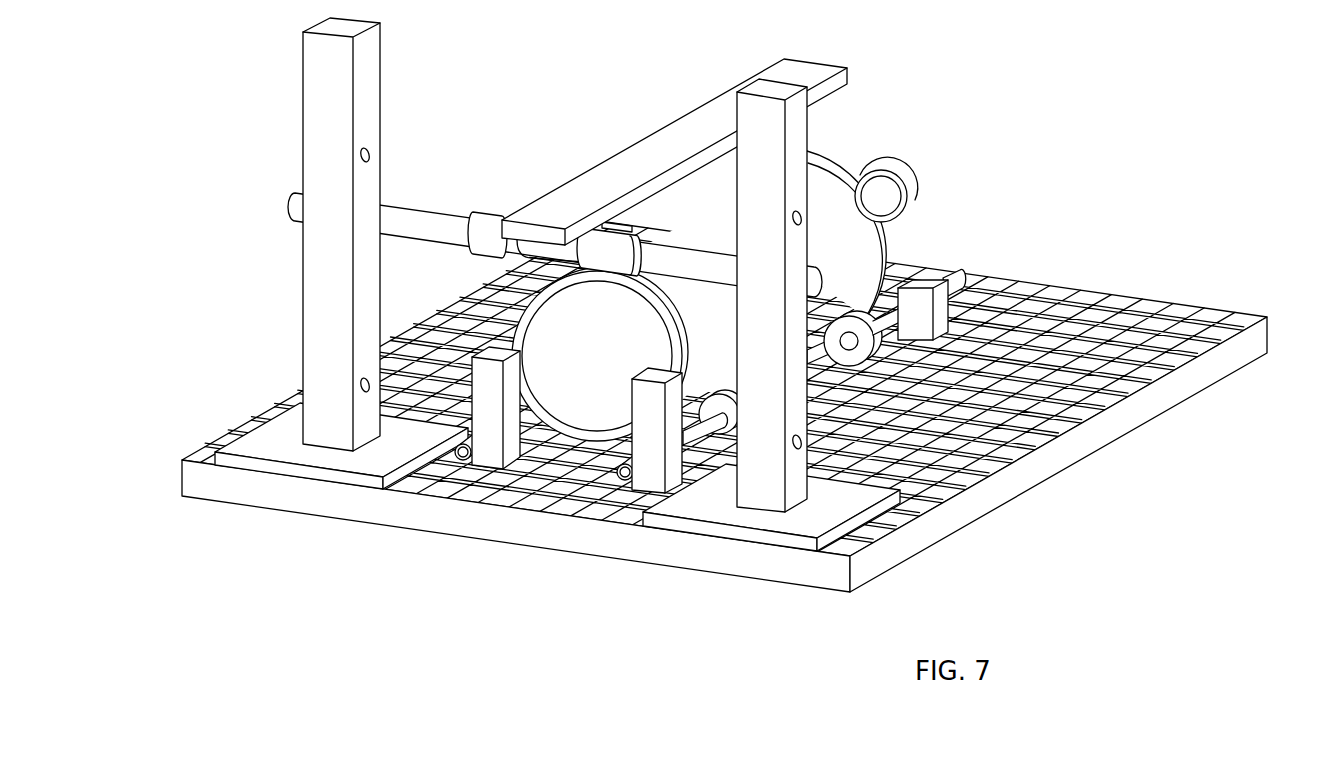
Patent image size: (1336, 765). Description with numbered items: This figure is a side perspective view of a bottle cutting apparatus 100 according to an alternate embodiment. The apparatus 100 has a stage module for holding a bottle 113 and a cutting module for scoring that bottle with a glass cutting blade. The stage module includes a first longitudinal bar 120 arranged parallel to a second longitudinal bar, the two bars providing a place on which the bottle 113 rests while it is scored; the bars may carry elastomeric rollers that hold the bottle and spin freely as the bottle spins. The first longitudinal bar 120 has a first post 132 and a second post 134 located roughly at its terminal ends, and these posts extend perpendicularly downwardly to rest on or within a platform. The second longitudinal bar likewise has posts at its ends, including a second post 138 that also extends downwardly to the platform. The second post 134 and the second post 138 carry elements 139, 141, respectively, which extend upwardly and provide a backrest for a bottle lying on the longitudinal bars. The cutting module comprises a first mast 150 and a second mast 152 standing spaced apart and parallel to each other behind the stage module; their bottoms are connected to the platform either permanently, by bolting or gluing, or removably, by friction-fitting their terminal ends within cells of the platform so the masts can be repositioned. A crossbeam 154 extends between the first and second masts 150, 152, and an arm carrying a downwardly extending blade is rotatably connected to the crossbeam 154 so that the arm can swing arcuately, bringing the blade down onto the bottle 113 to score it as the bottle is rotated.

The bottle cutting apparatus 100 is at (258, 146).
The bottle 113 is at (828, 192).
The first longitudinal bar 120 is at (908, 300).
The first post 132 is at (932, 287).
The second post 134 is at (658, 485).
The second post 138 is at (494, 461).
The element 139 is at (652, 375).
The element 141 is at (512, 368).
The first mast 150 is at (766, 425).
The second mast 152 is at (318, 291).
The crossbeam 154 is at (674, 263).